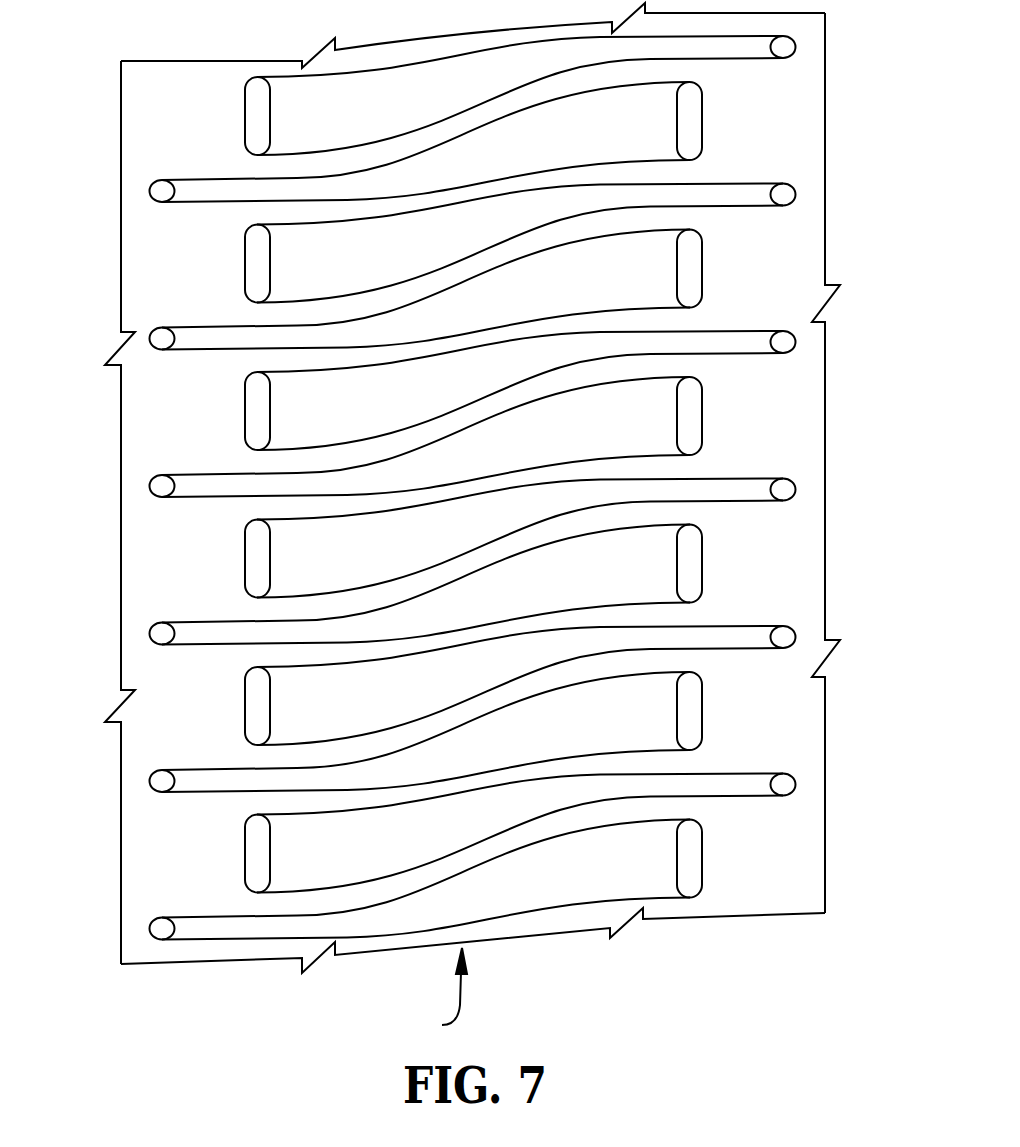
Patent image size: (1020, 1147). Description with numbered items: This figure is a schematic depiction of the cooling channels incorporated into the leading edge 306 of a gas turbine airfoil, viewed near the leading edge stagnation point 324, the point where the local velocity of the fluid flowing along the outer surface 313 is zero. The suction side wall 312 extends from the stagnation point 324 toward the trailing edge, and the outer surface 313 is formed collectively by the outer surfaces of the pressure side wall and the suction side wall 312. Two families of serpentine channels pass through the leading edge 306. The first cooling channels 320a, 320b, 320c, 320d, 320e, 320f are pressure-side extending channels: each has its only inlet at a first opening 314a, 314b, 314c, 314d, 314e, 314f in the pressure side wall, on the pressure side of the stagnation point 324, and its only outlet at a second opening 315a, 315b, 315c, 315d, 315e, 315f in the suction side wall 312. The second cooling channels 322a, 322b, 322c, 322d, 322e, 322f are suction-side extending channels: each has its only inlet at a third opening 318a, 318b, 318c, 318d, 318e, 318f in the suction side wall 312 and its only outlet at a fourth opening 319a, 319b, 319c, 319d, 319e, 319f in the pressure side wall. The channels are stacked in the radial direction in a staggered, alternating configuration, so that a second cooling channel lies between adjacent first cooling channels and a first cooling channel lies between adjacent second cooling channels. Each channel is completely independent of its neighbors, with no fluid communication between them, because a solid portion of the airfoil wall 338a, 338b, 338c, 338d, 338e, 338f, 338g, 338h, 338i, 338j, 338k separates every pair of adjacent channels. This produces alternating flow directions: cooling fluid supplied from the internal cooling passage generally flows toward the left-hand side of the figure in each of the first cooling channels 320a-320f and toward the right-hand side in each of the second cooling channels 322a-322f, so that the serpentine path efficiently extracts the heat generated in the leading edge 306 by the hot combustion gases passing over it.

The leading edge 306 is at (517, 938).
The suction side wall 312 is at (121, 571).
The outer surface 313 is at (793, 893).
The first opening 314a is at (690, 121).
The first opening 314b is at (690, 268).
The first opening 314c is at (690, 416).
The first opening 314d is at (690, 564).
The first opening 314e is at (690, 711).
The first opening 314f is at (690, 858).
The second opening 315a is at (166, 190).
The second opening 315b is at (166, 338).
The second opening 315c is at (166, 485).
The second opening 315d is at (166, 632).
The second opening 315e is at (166, 780).
The second opening 315f is at (166, 928).
The third opening 318a is at (258, 118).
The third opening 318b is at (258, 266).
The third opening 318c is at (258, 413).
The third opening 318d is at (258, 560).
The third opening 318e is at (258, 708).
The third opening 318f is at (258, 856).
The fourth opening 319a is at (786, 50).
The fourth opening 319b is at (786, 198).
The fourth opening 319c is at (786, 345).
The fourth opening 319d is at (786, 492).
The fourth opening 319e is at (786, 640).
The fourth opening 319f is at (786, 788).
The first cooling channel 320a is at (620, 120).
The first cooling channel 320b is at (620, 268).
The first cooling channel 320c is at (620, 415).
The first cooling channel 320d is at (620, 562).
The first cooling channel 320e is at (620, 710).
The first cooling channel 320f is at (620, 858).
The second cooling channel 322a is at (363, 98).
The second cooling channel 322b is at (363, 246).
The second cooling channel 322c is at (363, 393).
The second cooling channel 322d is at (363, 540).
The second cooling channel 322e is at (363, 688).
The second cooling channel 322f is at (363, 836).
The leading edge stagnation point 324 is at (432, 996).
The solid portion of the airfoil wall 338a is at (487, 114).
The solid portion of the airfoil wall 338b is at (475, 199).
The solid portion of the airfoil wall 338c is at (487, 262).
The solid portion of the airfoil wall 338d is at (475, 346).
The solid portion of the airfoil wall 338e is at (487, 409).
The solid portion of the airfoil wall 338f is at (475, 494).
The solid portion of the airfoil wall 338g is at (487, 556).
The solid portion of the airfoil wall 338h is at (475, 642).
The solid portion of the airfoil wall 338i is at (487, 704).
The solid portion of the airfoil wall 338j is at (475, 789).
The solid portion of the airfoil wall 338k is at (487, 852).